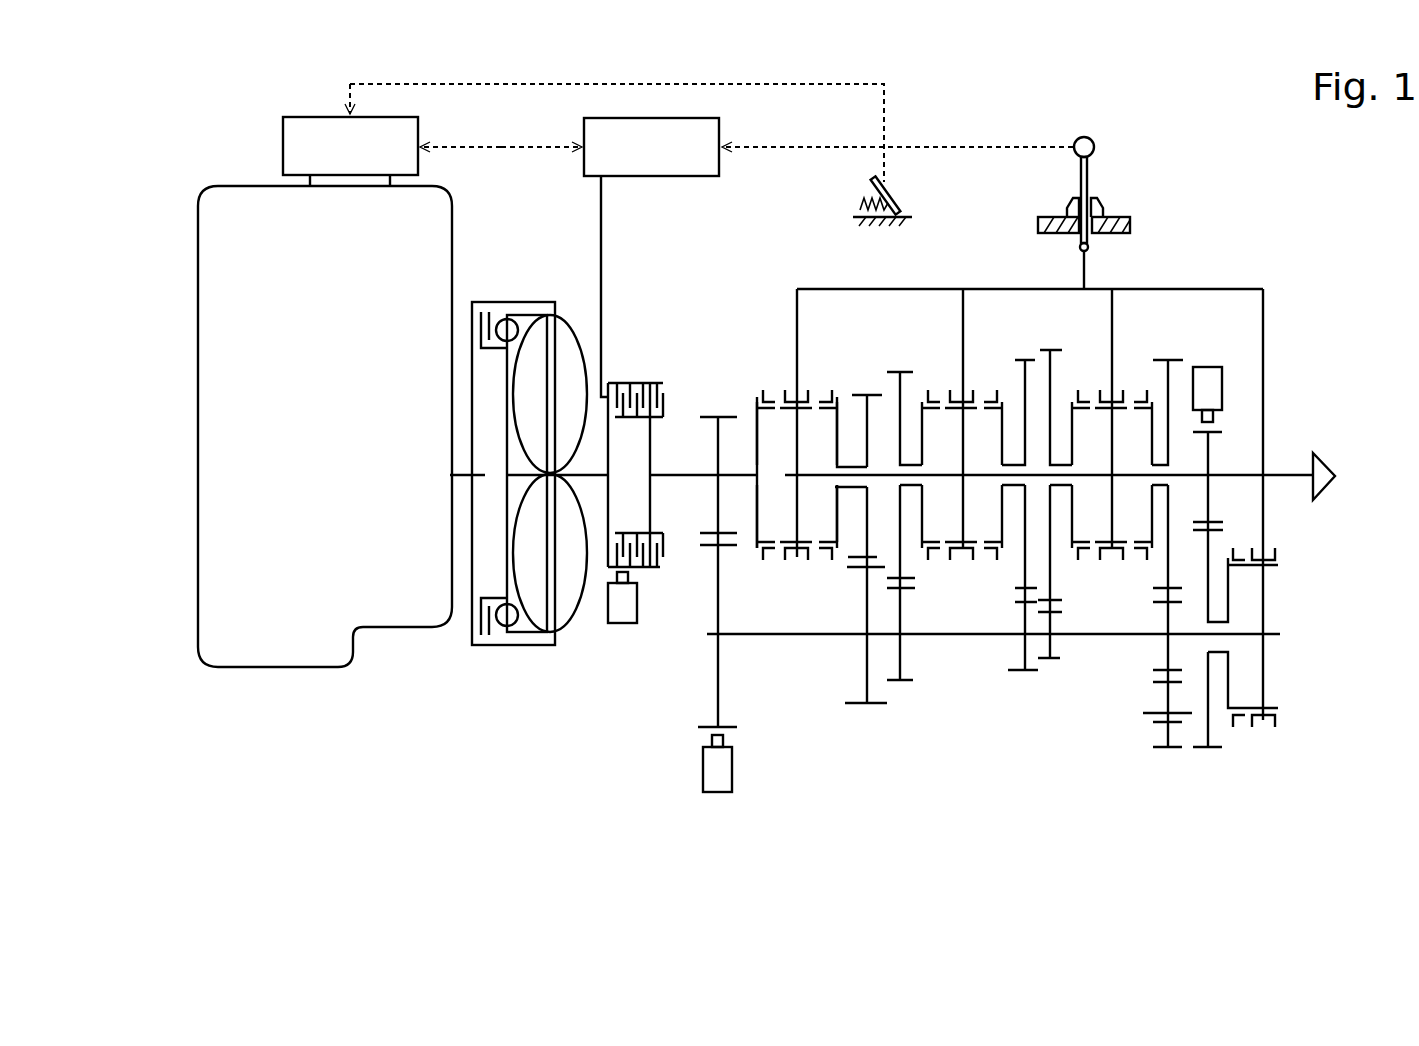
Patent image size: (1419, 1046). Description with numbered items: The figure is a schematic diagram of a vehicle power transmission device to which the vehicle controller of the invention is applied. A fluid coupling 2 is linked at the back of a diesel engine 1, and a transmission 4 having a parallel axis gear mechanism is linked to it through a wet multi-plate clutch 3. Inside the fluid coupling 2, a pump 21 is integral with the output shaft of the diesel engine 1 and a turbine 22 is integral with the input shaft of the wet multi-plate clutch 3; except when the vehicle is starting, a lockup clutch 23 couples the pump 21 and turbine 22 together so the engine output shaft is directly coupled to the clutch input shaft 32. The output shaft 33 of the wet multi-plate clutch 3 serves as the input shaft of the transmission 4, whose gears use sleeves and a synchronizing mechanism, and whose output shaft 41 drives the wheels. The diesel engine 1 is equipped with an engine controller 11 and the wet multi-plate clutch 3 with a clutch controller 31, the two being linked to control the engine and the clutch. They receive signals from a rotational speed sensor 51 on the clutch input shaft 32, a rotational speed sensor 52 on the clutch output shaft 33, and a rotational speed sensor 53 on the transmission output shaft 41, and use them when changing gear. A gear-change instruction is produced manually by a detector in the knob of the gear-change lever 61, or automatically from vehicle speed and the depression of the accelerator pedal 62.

The diesel engine 1 is at (277, 670).
The engine controller 11 is at (307, 114).
The fluid coupling 2 is at (525, 469).
The pump 21 is at (564, 347).
The turbine 22 is at (537, 346).
The lockup clutch 23 is at (477, 332).
The wet multi-plate clutch 3 is at (651, 380).
The clutch controller 31 is at (636, 115).
The input shaft of the wet multi-plate clutch 32 is at (585, 470).
The output shaft of the wet multi-plate clutch 33 is at (665, 470).
The transmission 4 is at (1008, 575).
The output shaft of the transmission 41 is at (1227, 473).
The rotational speed sensor 51 is at (620, 627).
The rotational speed sensor 52 is at (736, 773).
The rotational speed sensor 53 is at (1208, 365).
The gear-change lever 61 is at (1091, 192).
The accelerator pedal 62 is at (899, 198).